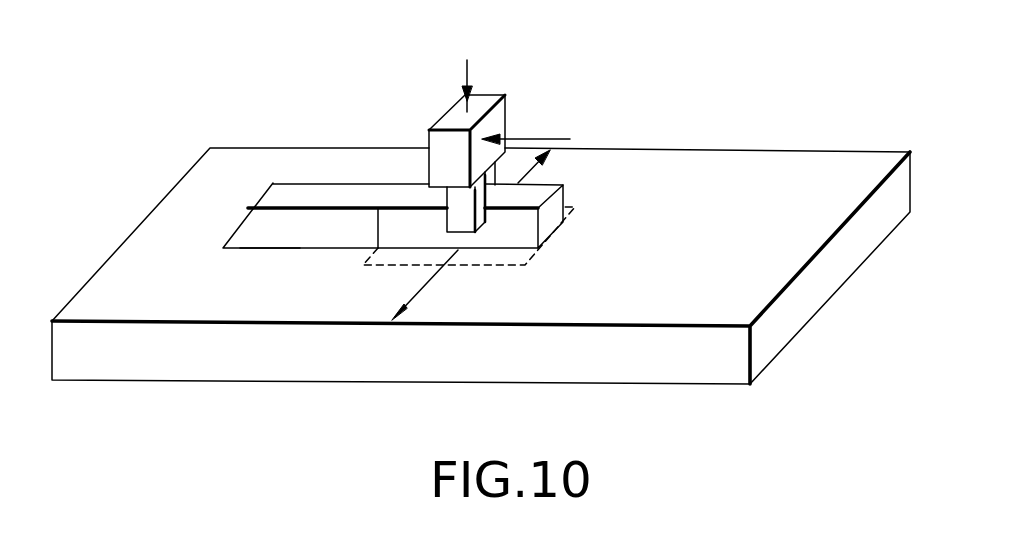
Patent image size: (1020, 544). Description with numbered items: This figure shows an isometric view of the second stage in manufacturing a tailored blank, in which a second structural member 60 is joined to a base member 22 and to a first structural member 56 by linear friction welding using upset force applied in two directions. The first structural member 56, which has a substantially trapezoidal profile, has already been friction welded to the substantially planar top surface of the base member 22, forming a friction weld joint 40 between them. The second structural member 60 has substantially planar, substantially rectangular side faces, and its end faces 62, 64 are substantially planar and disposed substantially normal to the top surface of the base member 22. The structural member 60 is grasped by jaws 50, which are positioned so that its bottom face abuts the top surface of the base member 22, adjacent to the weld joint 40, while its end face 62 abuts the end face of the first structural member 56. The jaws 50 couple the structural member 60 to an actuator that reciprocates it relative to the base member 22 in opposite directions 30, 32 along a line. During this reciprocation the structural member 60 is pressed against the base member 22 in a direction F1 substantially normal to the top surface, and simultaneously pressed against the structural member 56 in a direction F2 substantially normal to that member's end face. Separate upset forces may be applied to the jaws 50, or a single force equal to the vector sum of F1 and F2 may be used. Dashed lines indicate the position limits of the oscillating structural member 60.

The base member 22 is at (787, 158).
The direction 30 is at (520, 180).
The direction 32 is at (420, 293).
The friction weld joint 40 is at (260, 248).
The jaws 50 is at (505, 105).
The first structural member 56 is at (242, 227).
The second structural member 60 is at (410, 186).
The end face 62 is at (378, 228).
The end face 64 is at (560, 200).
The direction F1 is at (465, 72).
The direction F2 is at (535, 137).